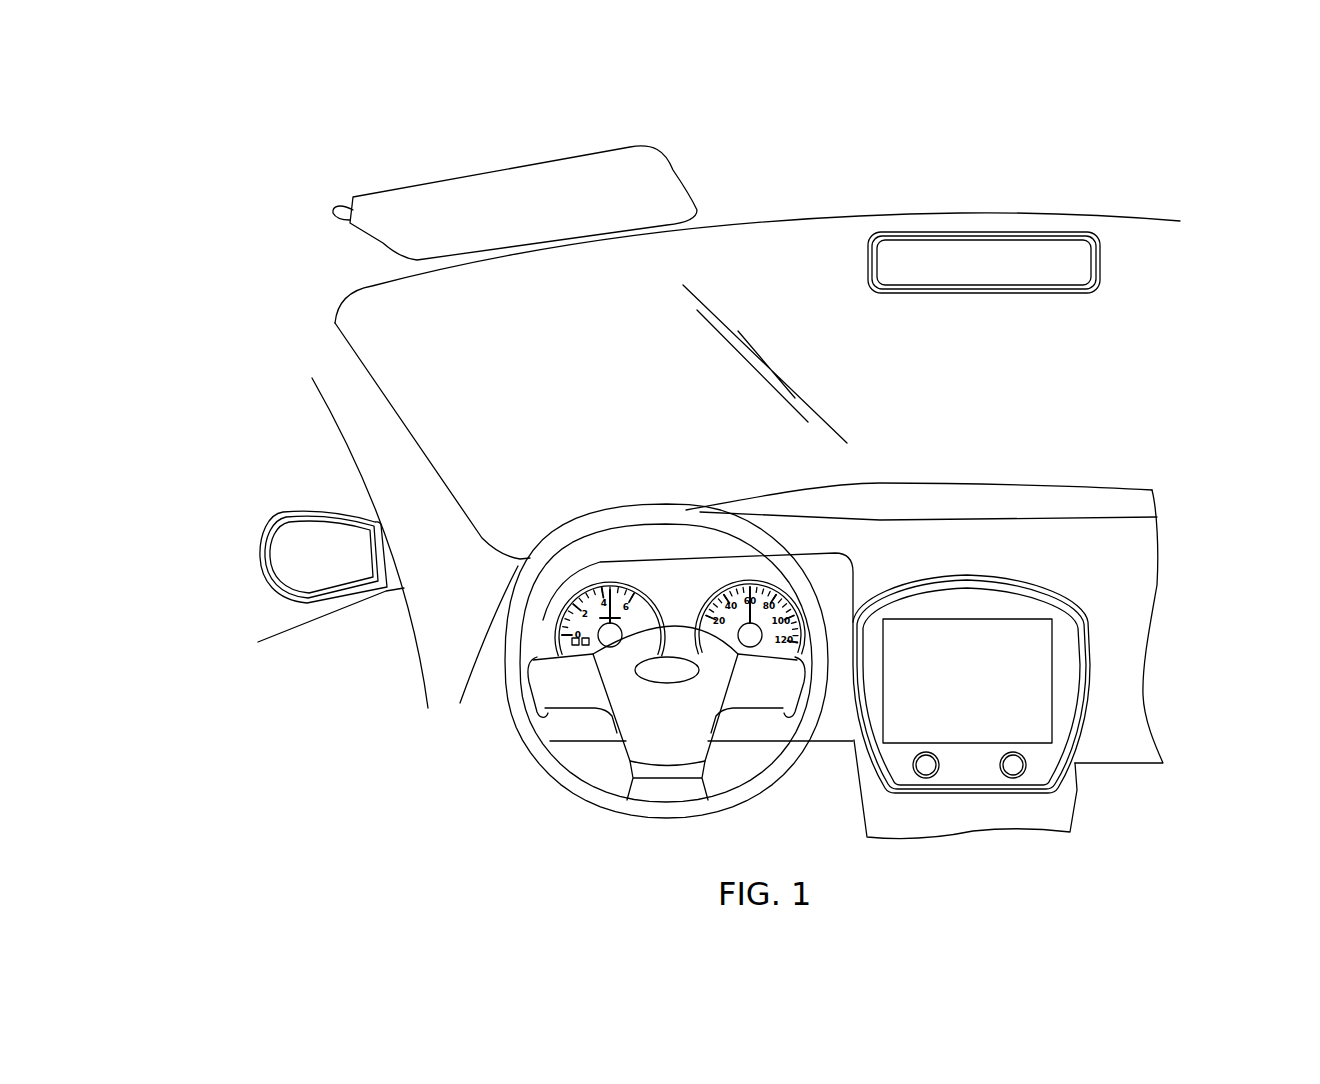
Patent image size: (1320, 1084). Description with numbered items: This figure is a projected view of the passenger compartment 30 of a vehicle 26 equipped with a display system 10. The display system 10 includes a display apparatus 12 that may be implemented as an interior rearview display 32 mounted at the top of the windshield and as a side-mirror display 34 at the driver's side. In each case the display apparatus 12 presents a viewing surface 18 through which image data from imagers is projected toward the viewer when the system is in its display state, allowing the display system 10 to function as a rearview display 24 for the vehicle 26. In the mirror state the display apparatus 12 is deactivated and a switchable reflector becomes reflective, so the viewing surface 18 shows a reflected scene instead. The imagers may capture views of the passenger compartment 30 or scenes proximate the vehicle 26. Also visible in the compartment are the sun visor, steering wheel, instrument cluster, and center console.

The display system 10 is at (1225, 137).
The display apparatus 12 is at (1032, 291).
The viewing surface 18 is at (992, 270).
The rearview display 24 is at (613, 464).
The vehicle 26 is at (217, 133).
The passenger compartment 30 is at (1150, 429).
The interior rearview display 32 is at (900, 268).
The side-mirror display 34 is at (283, 540).